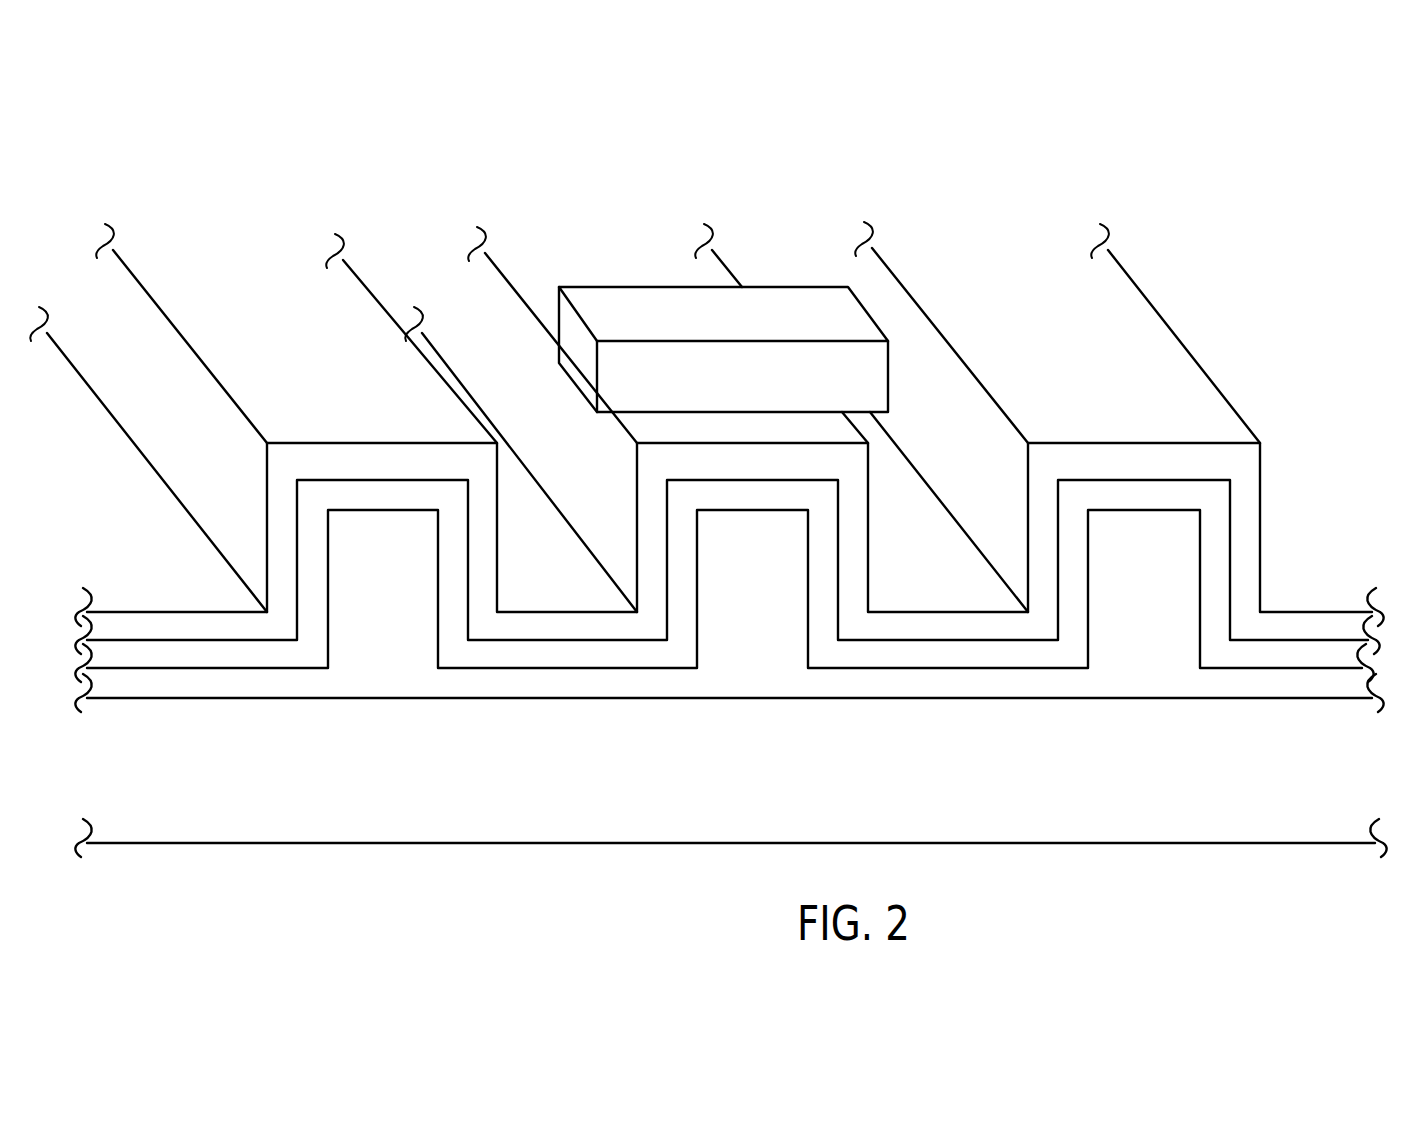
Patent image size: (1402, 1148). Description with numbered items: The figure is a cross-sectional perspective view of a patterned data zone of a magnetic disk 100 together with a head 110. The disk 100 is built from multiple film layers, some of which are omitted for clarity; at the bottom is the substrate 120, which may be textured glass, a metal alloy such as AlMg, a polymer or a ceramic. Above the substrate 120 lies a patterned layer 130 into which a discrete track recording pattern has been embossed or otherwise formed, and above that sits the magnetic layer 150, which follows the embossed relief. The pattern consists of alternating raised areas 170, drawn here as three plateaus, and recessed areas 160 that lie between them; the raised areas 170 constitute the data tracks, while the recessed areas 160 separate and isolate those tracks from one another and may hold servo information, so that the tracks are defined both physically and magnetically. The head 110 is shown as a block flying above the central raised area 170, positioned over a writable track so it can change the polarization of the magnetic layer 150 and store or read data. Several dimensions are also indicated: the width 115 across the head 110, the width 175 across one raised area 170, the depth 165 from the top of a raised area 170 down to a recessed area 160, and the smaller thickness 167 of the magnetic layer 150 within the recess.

The disk 100 is at (1052, 108).
The head 110 is at (800, 391).
The head width 115 is at (848, 277).
The substrate 120 is at (885, 797).
The patterned layer 130 is at (1130, 614).
The magnetic layer 150 is at (724, 658).
The recessed areas 160 is at (137, 606).
The recess depth 165 is at (604, 612).
The layer thickness 167 is at (604, 612).
The raised areas 170 is at (1142, 422).
The raised area width 175 is at (1176, 337).